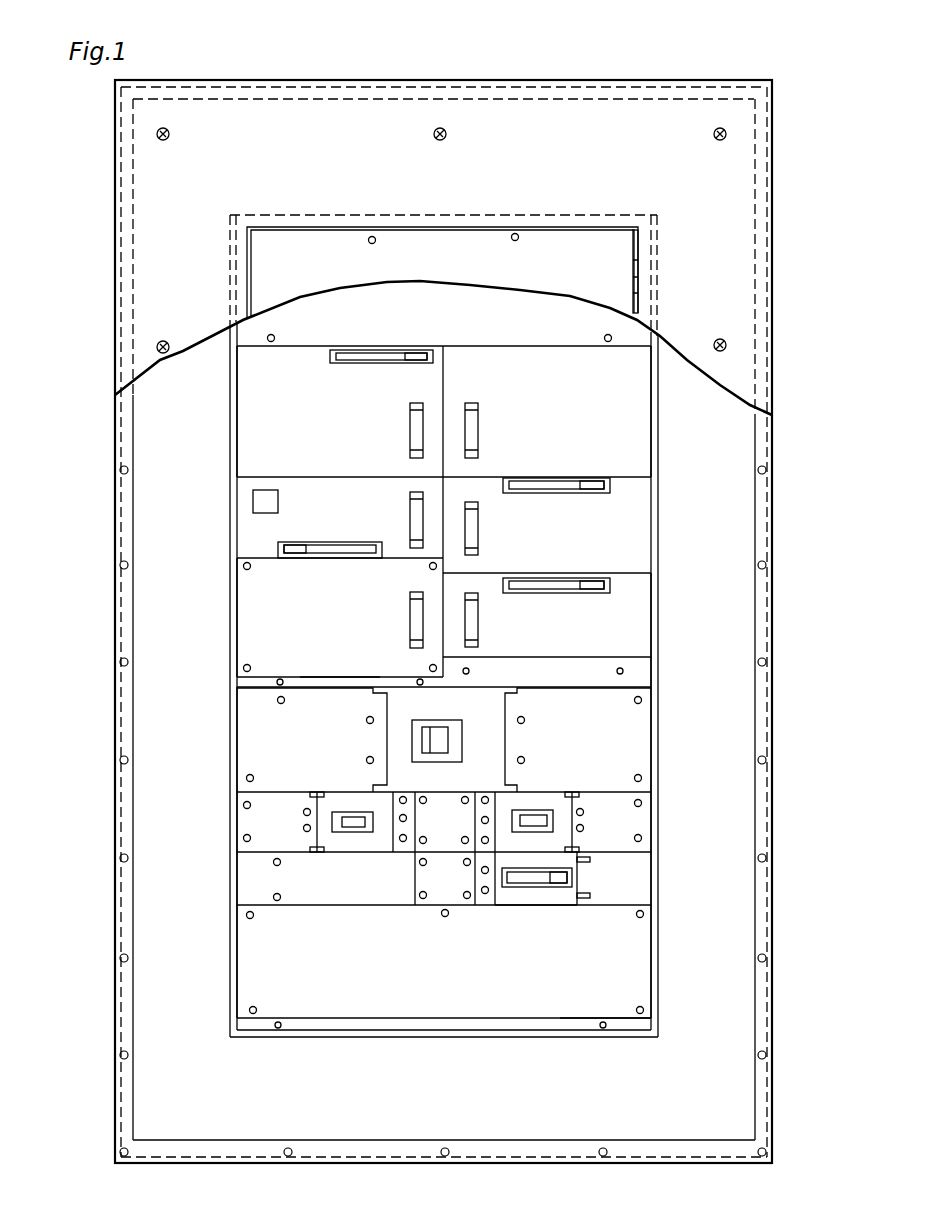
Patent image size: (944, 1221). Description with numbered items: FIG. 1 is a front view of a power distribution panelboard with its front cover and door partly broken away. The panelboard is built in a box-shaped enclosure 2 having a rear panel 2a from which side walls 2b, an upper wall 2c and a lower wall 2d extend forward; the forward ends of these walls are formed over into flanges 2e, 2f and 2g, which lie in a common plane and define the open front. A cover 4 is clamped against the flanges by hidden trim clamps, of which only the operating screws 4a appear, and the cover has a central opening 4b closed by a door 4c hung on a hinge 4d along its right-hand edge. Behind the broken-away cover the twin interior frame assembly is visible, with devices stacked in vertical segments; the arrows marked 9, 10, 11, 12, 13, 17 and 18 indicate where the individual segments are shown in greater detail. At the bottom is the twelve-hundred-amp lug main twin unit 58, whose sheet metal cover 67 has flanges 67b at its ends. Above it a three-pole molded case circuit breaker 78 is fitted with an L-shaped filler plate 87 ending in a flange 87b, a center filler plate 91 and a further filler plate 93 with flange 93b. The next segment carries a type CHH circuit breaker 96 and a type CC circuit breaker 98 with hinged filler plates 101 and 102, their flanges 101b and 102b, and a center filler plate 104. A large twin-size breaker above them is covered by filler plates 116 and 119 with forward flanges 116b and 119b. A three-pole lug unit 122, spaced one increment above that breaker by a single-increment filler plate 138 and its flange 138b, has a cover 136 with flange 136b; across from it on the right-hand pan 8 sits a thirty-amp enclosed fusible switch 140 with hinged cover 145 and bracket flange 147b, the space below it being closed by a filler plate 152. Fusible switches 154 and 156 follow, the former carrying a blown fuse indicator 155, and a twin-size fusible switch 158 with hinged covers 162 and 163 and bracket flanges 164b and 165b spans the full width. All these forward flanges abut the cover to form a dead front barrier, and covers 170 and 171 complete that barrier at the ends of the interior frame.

The enclosure 2 is at (782, 522).
The rear panel 2a is at (438, 1096).
The side walls 2b is at (115, 607).
The upper wall 2c is at (525, 80).
The lower wall 2d is at (247, 1165).
The forward flanges 2e is at (120, 683).
The forward flange 2f is at (372, 87).
The forward flange 2g is at (378, 1148).
The cover 4 is at (666, 110).
The operating screws 4a is at (157, 134).
The central opening 4b is at (250, 276).
The door 4c is at (567, 238).
The hinge 4d is at (640, 250).
The right-hand pan 8 is at (183, 1018).
The section line 9 is at (183, 905).
The section line 10 is at (183, 852).
The section line 11 is at (183, 792).
The section line 12 is at (183, 677).
The section line 13 is at (183, 477).
The section line 17 is at (210, 1055).
The section line 18 is at (272, 185).
The lug main twin unit 58 is at (424, 978).
The sheet metal cover 67 is at (570, 1005).
The outwardly extending flanges 67b is at (233, 988).
The three-pole molded case circuit breaker 78 is at (518, 918).
The L-shaped filler plate 87 is at (600, 897).
The right angle flange 87b is at (652, 890).
The center filler plate 91 is at (433, 897).
The filler plate 93 is at (322, 897).
The right angle flange 93b is at (233, 888).
The type CHH molded case circuit breaker 96 is at (351, 805).
The type CC molded case circuit breaker 98 is at (540, 795).
The hinged filler plate 101 is at (260, 837).
The right angle flange 101b is at (233, 828).
The hinged filler plate 102 is at (597, 837).
The right angle flange 102b is at (652, 828).
The center filler plate 104 is at (429, 837).
The filler plate 116 is at (300, 742).
The right-angle forward flange 116b is at (238, 753).
The filler plate 119 is at (563, 743).
The right-angle forward flange 119b is at (653, 741).
The three-pole lug unit 122 is at (311, 614).
The cover 136 is at (240, 590).
The right-angle forward flange 136b is at (238, 620).
The single increment filler plate 138 is at (322, 681).
The panel side flange 138b is at (247, 672).
The enclosed fusible switch 140 is at (538, 640).
The hinged cover 145 is at (634, 624).
The forward flange 147b is at (652, 606).
The filler plate 152 is at (524, 690).
The enclosed fusible switch 154 is at (366, 518).
The blown fuse indicator device 155 is at (272, 502).
The enclosed fusible switch 156 is at (540, 540).
The twin size enclosed fusible switch 158 is at (450, 342).
The hinged cover 162 is at (257, 428).
The hinged cover 163 is at (640, 433).
The forward flange 164b is at (231, 402).
The forward flange 165b is at (656, 410).
The cover 170 is at (370, 1032).
The cover 171 is at (370, 320).